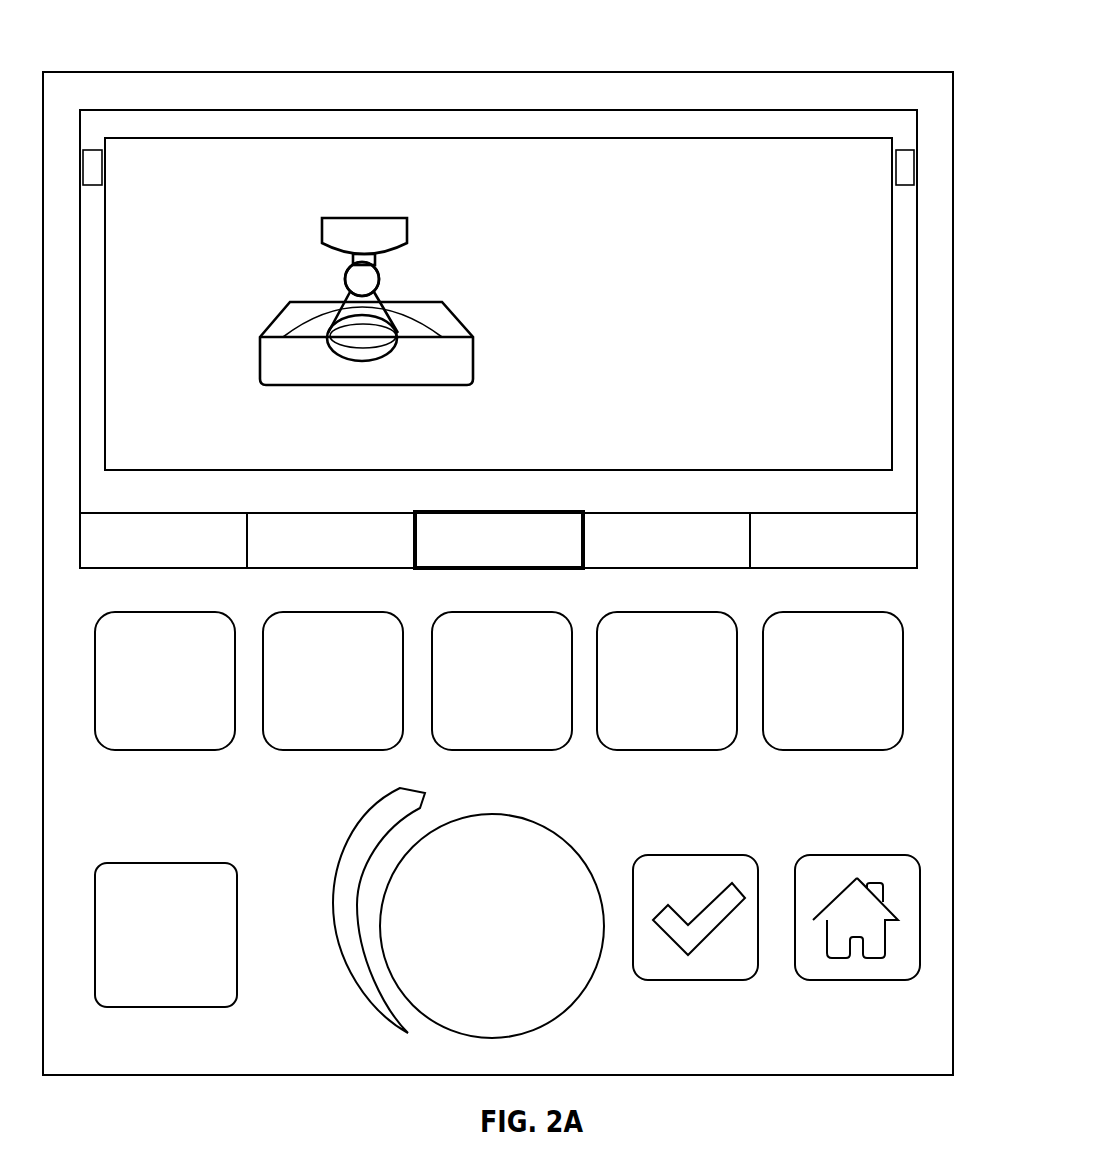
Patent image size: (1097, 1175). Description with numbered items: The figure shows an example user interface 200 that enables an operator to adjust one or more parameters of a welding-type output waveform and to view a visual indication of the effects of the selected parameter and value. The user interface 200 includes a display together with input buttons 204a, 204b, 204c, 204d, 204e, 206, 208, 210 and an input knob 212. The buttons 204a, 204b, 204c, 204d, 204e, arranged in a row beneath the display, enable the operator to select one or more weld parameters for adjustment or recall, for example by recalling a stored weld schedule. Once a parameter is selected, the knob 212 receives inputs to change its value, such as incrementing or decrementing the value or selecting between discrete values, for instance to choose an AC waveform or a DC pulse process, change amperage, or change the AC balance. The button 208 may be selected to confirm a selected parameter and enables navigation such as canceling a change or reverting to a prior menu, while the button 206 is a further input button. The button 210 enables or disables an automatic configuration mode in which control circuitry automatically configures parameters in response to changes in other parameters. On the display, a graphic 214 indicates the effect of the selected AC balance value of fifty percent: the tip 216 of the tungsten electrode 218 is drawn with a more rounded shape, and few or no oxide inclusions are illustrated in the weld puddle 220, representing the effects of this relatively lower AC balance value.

The user interface 200 is at (864, 48).
The input button 204a is at (146, 752).
The input button 204b is at (316, 752).
The input button 204c is at (486, 752).
The input button 204d is at (656, 752).
The input button 204e is at (826, 752).
The input button 206 is at (677, 982).
The input button 208 is at (842, 982).
The input button 210 is at (164, 1009).
The input knob 212 is at (540, 1030).
The graphic 214 is at (316, 272).
The tip 216 is at (401, 274).
The tungsten electrode 218 is at (357, 280).
The weld puddle 220 is at (365, 333).